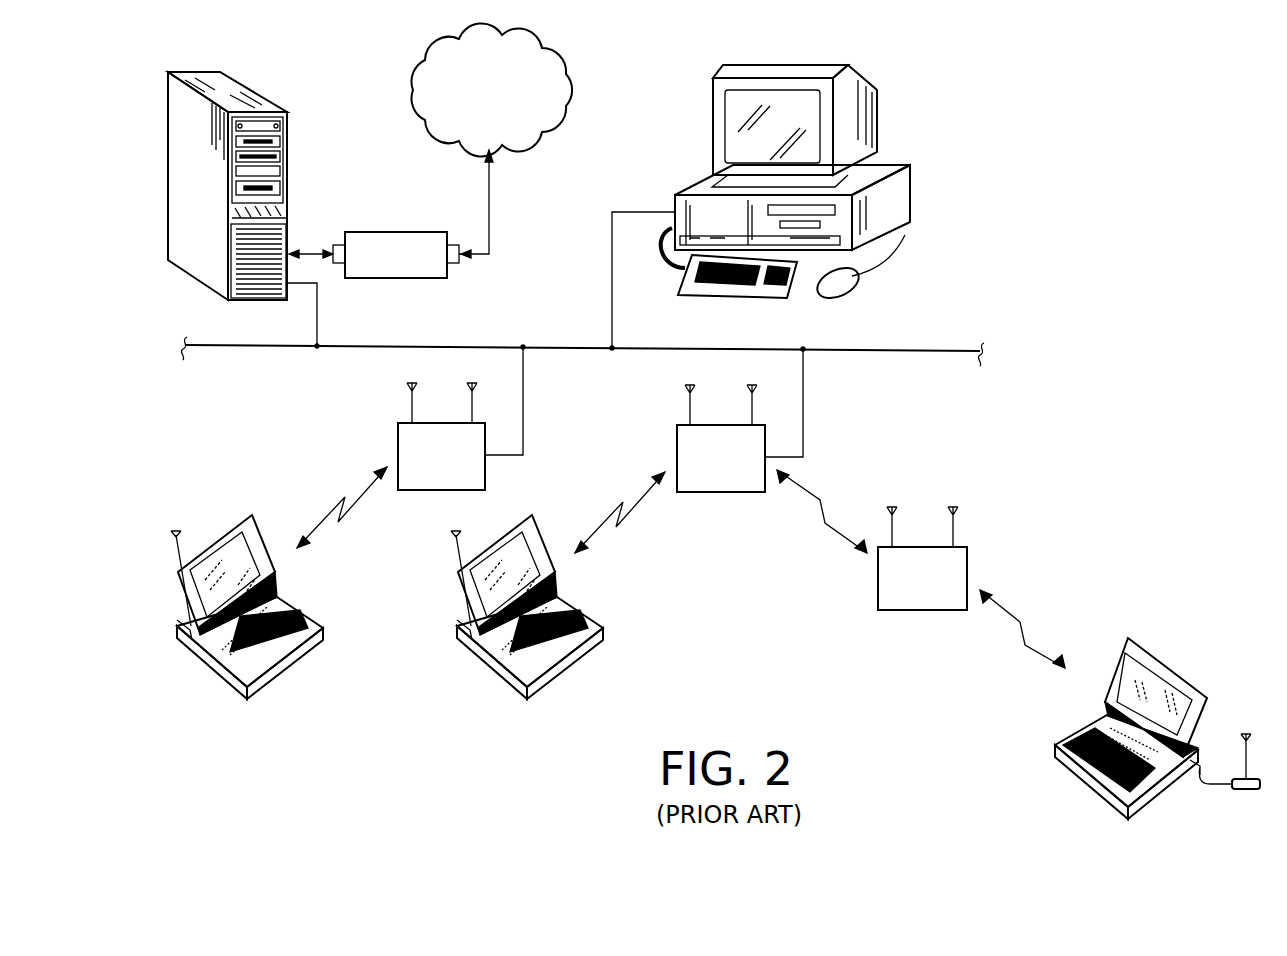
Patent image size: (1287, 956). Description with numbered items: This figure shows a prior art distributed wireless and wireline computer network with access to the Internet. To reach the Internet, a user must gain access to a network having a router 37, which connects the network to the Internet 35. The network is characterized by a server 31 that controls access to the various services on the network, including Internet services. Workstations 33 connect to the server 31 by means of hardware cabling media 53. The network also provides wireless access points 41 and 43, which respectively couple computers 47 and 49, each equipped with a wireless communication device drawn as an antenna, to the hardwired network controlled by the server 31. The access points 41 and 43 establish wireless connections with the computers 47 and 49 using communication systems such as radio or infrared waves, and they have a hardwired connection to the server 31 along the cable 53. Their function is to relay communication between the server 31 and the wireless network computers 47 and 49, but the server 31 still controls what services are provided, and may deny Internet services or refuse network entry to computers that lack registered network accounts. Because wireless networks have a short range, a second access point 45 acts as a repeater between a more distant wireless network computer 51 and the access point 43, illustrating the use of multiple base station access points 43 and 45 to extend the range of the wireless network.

The server 31 is at (235, 80).
The workstation 33 is at (885, 162).
The Internet 35 is at (547, 57).
The router 37 is at (391, 232).
The wireless access point 41 is at (398, 436).
The wireless access point 43 is at (676, 432).
The second access point 45 is at (878, 592).
The computer 47 is at (290, 663).
The computer 49 is at (570, 663).
The wireless network computer 51 is at (1078, 767).
The hardware cabling media 53 is at (563, 346).